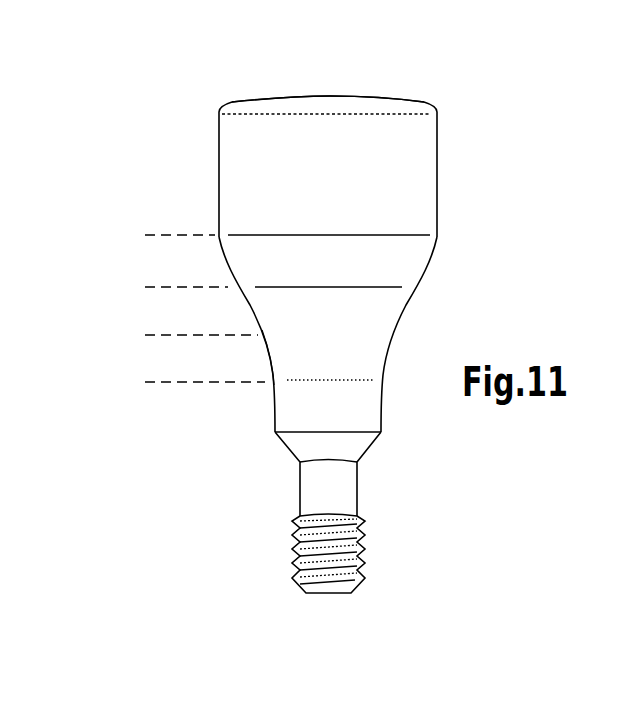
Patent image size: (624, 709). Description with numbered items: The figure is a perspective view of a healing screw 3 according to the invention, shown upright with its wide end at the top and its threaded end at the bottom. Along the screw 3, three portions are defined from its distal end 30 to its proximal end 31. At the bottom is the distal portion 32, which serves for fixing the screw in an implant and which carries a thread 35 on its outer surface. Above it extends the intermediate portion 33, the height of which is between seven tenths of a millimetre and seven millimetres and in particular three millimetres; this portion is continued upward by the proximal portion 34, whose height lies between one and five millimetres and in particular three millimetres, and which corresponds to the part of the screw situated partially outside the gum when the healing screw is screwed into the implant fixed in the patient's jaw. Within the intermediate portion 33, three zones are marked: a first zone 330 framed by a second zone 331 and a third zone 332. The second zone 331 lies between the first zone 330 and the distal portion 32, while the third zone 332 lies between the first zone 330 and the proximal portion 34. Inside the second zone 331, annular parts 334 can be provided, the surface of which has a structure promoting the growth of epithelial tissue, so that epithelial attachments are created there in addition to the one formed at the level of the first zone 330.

The healing screw 3 is at (488, 183).
The distal end 30 is at (327, 594).
The proximal end 31 is at (353, 97).
The distal portion 32 is at (246, 479).
The intermediate portion 33 is at (70, 232).
The proximal portion 34 is at (198, 163).
The thread 35 is at (366, 545).
The first zone 330 is at (138, 286).
The second zone 331 is at (138, 334).
The third zone 332 is at (138, 235).
The annular parts 334 is at (193, 360).